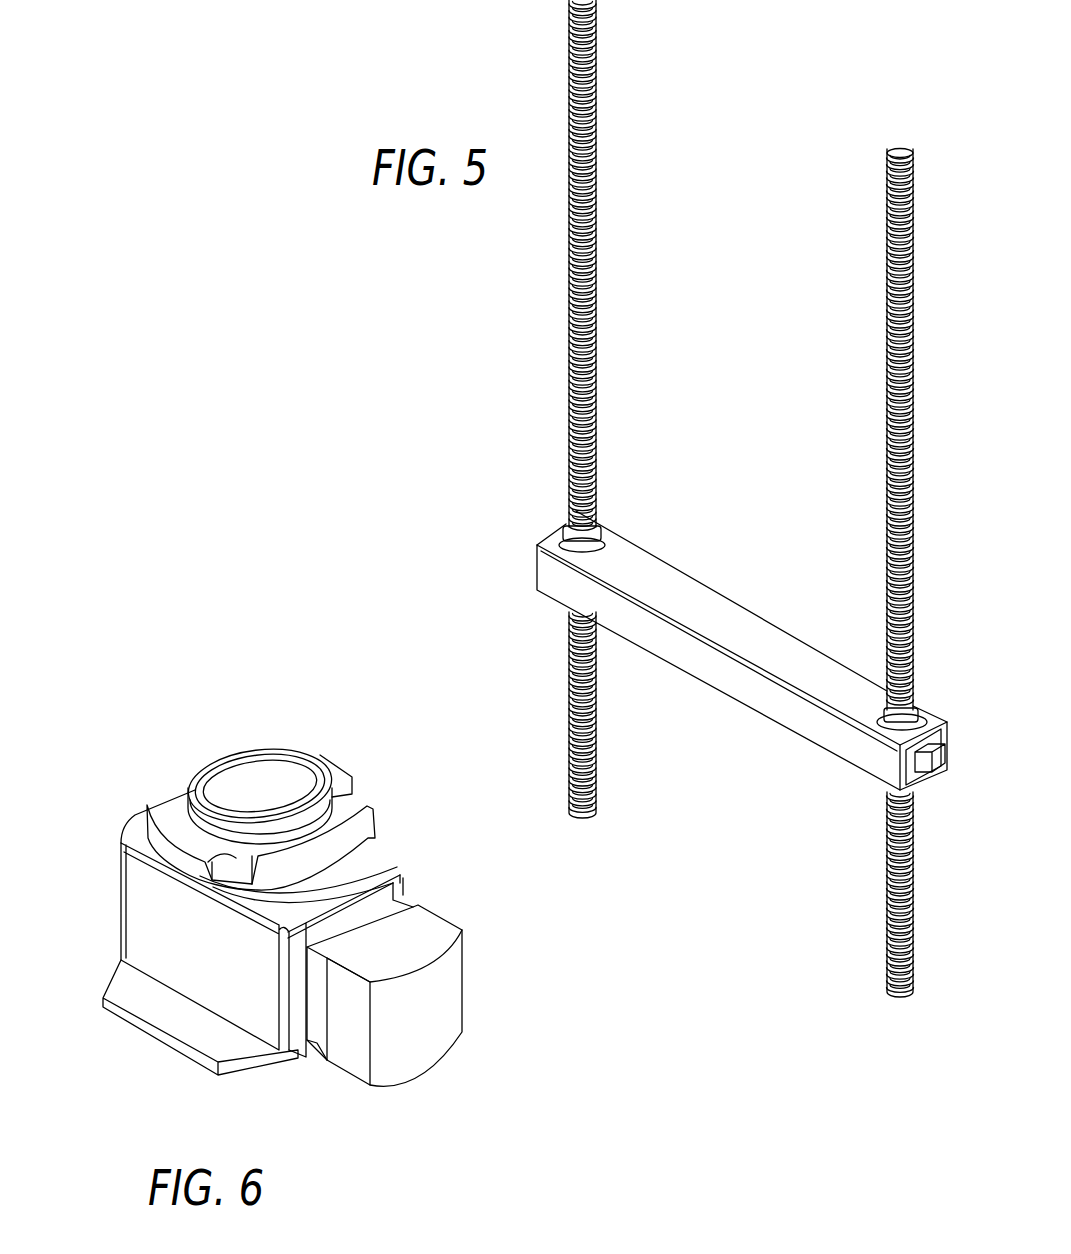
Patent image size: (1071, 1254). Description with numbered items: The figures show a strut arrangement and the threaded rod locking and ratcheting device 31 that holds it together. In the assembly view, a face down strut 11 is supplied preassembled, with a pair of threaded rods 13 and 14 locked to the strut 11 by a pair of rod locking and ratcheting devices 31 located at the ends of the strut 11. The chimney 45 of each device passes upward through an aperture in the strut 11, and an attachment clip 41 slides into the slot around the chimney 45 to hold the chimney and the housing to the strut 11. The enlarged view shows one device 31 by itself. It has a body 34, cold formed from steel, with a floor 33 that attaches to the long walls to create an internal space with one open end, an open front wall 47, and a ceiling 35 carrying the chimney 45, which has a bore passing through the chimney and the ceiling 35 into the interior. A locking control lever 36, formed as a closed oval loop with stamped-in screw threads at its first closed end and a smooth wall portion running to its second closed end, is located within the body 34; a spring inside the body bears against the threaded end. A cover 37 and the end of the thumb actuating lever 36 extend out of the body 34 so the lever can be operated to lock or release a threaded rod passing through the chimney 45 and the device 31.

In FIG. 5, the strut 11 is at (745, 605).
In FIG. 5, the rod 13 is at (885, 433).
In FIG. 5, the rod 14 is at (567, 253).
In FIG. 5, the threaded rod locking and ratcheting device 31 is at (606, 530).
In FIG. 6, the threaded rod locking and ratcheting device 31 is at (116, 803).
In FIG. 6, the floor 33 is at (158, 1042).
In FIG. 6, the body 34 is at (151, 907).
In FIG. 6, the ceiling 35 is at (373, 867).
In FIG. 6, the locking control lever 36 is at (401, 904).
In FIG. 6, the cover 37 is at (431, 1008).
In FIG. 5, the attachment clip 41 is at (566, 528).
In FIG. 6, the attachment clip 41 is at (372, 812).
In FIG. 6, the chimney 45 is at (258, 747).
In FIG. 6, the open front wall 47 is at (311, 1046).